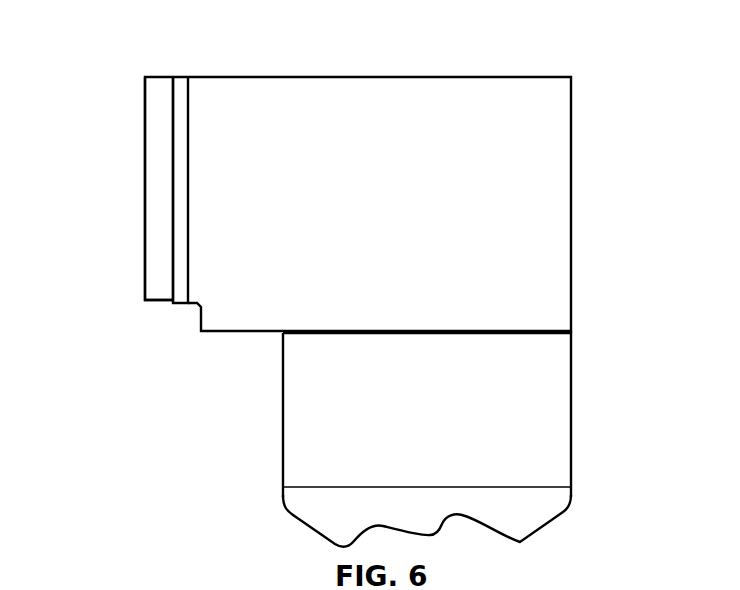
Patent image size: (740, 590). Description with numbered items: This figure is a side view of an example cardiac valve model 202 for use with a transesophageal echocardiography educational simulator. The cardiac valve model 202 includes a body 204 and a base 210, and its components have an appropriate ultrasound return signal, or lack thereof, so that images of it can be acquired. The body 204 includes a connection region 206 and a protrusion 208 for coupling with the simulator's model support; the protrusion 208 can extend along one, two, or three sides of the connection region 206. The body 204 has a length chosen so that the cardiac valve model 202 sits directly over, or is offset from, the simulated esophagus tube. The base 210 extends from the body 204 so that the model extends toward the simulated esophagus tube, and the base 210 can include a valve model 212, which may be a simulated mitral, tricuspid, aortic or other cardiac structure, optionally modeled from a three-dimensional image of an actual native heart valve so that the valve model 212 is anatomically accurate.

The cardiac valve model 202 is at (130, 36).
The body 204 is at (571, 192).
The connection region 206 is at (158, 174).
The protrusion 208 is at (178, 303).
The base 210 is at (558, 417).
The valve model 212 is at (518, 530).